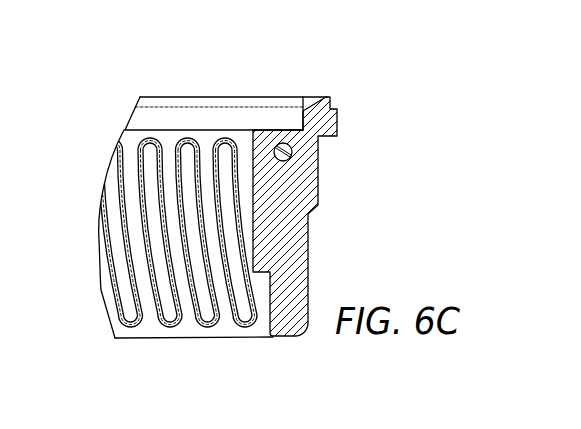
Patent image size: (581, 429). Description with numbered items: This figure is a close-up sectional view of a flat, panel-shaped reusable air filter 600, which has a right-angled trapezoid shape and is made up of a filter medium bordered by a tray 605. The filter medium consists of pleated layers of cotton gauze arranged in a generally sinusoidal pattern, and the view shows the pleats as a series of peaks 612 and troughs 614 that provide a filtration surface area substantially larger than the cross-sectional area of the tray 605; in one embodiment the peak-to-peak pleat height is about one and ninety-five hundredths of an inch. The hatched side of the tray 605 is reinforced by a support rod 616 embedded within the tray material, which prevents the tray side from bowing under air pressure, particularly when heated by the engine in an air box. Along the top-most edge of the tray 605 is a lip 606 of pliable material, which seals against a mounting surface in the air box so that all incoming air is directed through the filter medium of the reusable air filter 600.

The reusable air filter 600 is at (143, 65).
The tray 605 is at (298, 233).
The lip 606 is at (325, 100).
The peaks 612 is at (188, 137).
The troughs 614 is at (168, 328).
The support rods 616 is at (291, 153).